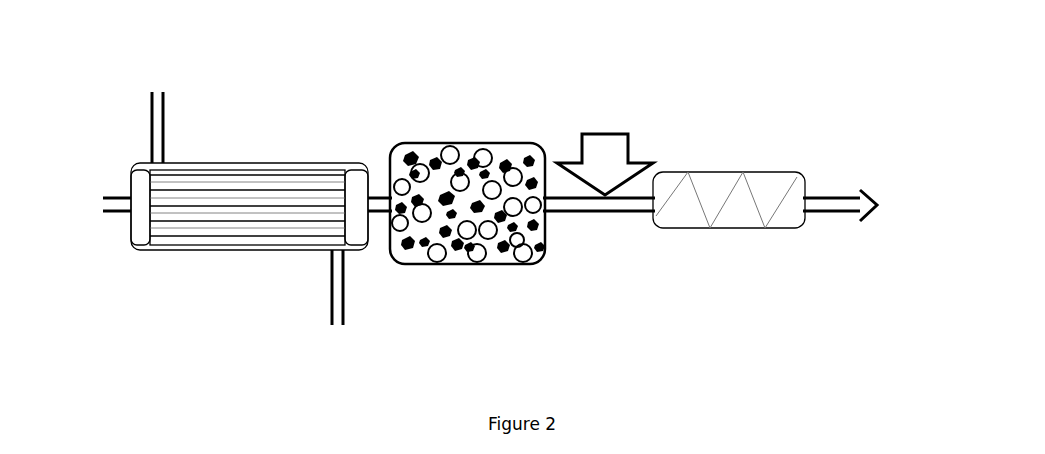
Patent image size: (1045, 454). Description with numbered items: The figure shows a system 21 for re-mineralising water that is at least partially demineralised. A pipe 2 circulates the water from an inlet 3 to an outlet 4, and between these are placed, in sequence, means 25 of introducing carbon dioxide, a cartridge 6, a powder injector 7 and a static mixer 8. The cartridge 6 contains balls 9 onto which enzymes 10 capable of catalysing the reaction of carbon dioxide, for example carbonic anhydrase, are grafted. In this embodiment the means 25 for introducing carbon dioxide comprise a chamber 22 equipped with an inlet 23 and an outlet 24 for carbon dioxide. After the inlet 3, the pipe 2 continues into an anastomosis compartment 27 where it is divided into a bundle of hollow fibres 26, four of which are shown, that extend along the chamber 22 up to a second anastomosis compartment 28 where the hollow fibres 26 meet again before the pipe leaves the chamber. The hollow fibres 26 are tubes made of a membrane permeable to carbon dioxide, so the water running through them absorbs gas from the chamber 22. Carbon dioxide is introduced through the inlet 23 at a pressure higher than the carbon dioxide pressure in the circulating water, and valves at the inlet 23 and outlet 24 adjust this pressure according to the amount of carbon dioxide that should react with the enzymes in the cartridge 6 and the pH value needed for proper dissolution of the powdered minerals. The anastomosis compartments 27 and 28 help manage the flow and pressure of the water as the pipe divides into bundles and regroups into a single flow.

The pipe 2 is at (580, 208).
The inlet 3 is at (103, 197).
The outlet 4 is at (860, 218).
The cartridge 6 is at (467, 168).
The powder injector 7 is at (600, 160).
The static mixer 8 is at (733, 205).
The balls 9 is at (475, 254).
The enzymes 10 is at (413, 250).
The system for re-mineralising water 21 is at (443, 186).
The chamber 22 is at (190, 246).
The inlet for CO2 23 is at (157, 98).
The outlet for CO2 24 is at (338, 322).
The means of introducing carbon dioxide 25 is at (274, 163).
The hollow fibres 26 is at (232, 200).
The anastomosis compartment 27 is at (140, 224).
The second anastomosis compartment 28 is at (353, 185).